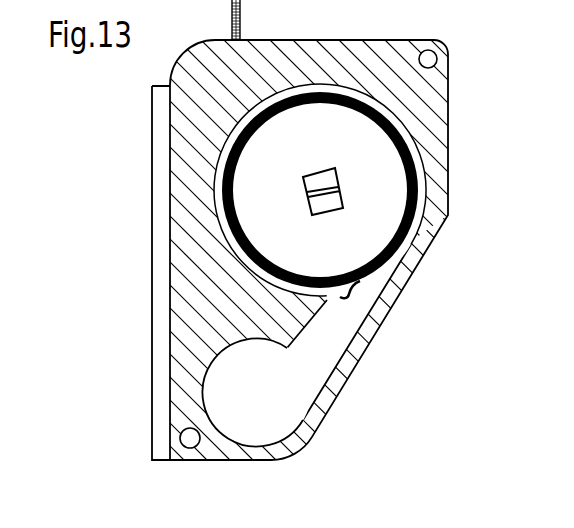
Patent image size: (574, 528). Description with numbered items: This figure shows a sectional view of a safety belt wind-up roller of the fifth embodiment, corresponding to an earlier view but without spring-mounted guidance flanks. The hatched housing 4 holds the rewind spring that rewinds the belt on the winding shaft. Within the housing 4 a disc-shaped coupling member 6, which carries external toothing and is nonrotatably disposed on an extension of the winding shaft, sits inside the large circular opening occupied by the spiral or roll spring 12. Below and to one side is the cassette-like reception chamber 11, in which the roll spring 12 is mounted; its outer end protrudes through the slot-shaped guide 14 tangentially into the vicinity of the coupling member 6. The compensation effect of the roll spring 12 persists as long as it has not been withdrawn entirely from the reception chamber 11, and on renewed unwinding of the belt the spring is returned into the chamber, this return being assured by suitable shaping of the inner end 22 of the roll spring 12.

The housing 4 is at (379, 40).
The coupling member 6 is at (377, 204).
The reception chamber 11 is at (270, 398).
The roll spring 12 is at (410, 135).
The slot-shaped guide 14 is at (322, 338).
The inner end of the roll spring 22 is at (352, 287).